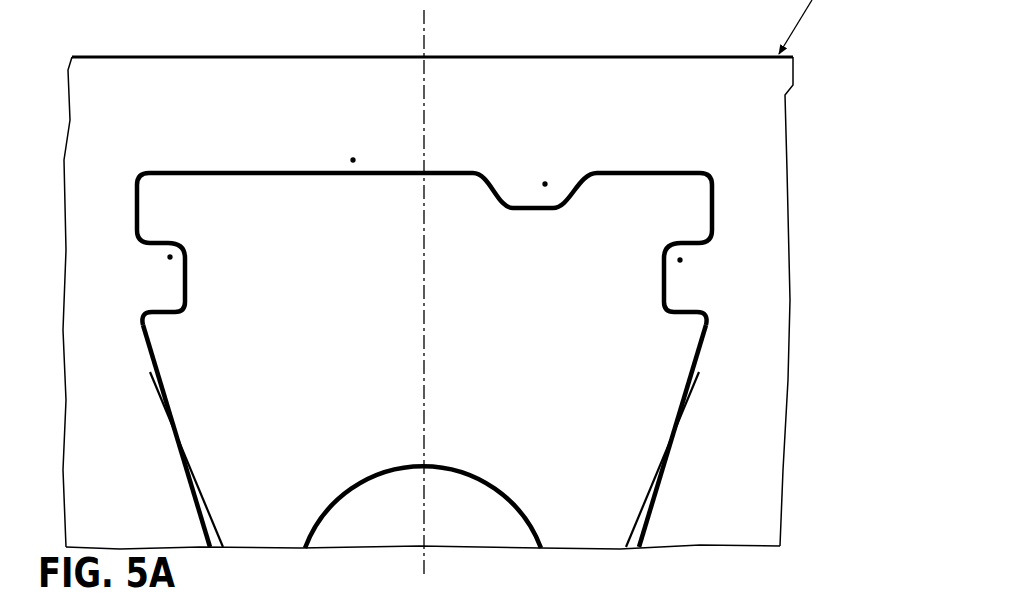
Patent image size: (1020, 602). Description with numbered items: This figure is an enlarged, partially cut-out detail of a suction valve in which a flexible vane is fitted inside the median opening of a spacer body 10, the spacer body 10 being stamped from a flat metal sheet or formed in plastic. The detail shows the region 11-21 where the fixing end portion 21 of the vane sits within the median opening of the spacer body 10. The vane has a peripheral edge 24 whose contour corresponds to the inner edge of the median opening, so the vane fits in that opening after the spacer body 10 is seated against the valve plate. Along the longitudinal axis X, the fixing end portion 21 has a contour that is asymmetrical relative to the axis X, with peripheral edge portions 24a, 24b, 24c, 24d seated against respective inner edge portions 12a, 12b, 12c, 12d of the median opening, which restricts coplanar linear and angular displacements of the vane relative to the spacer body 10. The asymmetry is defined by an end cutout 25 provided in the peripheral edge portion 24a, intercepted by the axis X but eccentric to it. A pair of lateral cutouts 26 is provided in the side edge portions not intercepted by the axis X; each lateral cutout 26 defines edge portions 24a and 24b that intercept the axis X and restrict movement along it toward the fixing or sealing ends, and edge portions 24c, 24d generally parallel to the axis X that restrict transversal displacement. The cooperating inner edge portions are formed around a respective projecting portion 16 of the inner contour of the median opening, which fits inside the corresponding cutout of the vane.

The spacer body 10 is at (622, 103).
The median opening with fixing end portion 11-21 is at (218, 509).
The inner edge portion 12a is at (382, 175).
The inner edge portion 12b is at (163, 240).
The inner edge portion 12c is at (147, 202).
The inner edge portion 12d is at (706, 202).
The projecting portion 16 is at (170, 257).
The fixing end portion 21 is at (330, 213).
The peripheral edge 24 is at (218, 508).
The peripheral edge portion 24a is at (357, 170).
The peripheral edge portion 24b is at (166, 257).
The peripheral edge portion 24c is at (135, 222).
The peripheral edge portion 24d is at (723, 222).
The end cutout 25 is at (504, 195).
The lateral cutout 26 is at (175, 286).
The longitudinal axis X is at (420, 397).